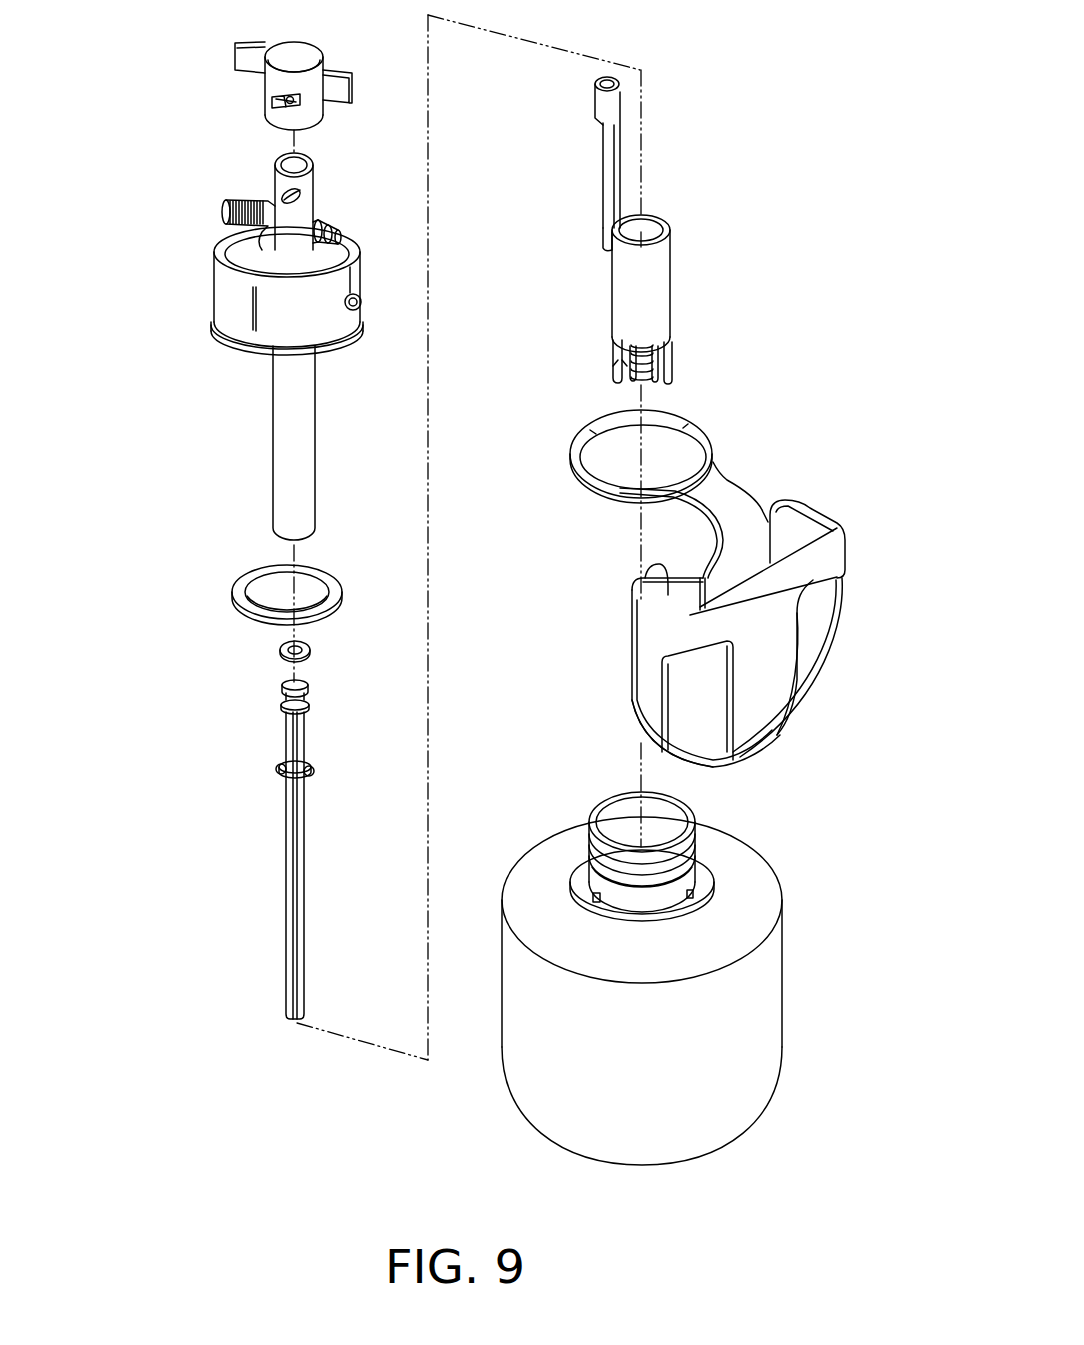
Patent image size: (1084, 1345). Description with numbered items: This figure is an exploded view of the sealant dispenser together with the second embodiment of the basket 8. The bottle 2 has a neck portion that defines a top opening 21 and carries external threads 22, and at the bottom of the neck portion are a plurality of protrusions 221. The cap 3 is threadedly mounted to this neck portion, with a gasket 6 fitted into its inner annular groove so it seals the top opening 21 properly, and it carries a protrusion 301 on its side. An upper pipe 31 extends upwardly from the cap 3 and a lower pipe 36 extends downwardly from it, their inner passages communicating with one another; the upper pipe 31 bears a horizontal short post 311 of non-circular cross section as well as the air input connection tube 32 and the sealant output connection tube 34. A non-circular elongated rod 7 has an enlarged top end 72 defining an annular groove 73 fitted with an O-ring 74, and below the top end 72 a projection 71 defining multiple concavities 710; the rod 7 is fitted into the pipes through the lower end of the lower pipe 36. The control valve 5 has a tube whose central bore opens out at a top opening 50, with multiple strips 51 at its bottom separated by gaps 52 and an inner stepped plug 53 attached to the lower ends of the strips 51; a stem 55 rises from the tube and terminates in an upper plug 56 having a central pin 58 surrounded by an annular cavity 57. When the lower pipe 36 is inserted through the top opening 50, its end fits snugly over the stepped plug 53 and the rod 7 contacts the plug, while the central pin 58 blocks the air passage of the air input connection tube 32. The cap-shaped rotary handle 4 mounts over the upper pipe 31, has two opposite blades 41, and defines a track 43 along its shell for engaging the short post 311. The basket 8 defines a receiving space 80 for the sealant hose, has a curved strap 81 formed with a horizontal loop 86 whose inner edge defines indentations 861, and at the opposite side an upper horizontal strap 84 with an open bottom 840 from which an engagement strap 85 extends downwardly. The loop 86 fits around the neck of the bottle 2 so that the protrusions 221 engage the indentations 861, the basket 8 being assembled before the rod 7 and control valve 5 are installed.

The bottle 2 is at (730, 1087).
The top opening 21 is at (677, 827).
The external threads 22 is at (700, 858).
The protrusions 221 is at (697, 897).
The cap 3 is at (232, 301).
The protrusion 301 is at (362, 305).
The upper pipe 31 is at (300, 212).
The horizontal short post 311 is at (291, 197).
The air input connection tube 32 is at (225, 212).
The sealant output connection tube 34 is at (318, 234).
The lower pipe 36 is at (288, 467).
The rotary handle 4 is at (298, 55).
The blades 41 is at (245, 63).
The track 43 is at (270, 103).
The control valve 5 is at (653, 297).
The top opening 50 is at (653, 230).
The strips 51 is at (670, 363).
The gaps 52 is at (662, 353).
The inner stepped plug 53 is at (624, 365).
The stem 55 is at (607, 172).
The upper plug 56 is at (600, 101).
The annular cavity 57 is at (598, 79).
The central pin 58 is at (615, 88).
The gasket 6 is at (238, 590).
The elongated rod 7 is at (287, 918).
The projection 71 is at (278, 768).
The concavities 710 is at (305, 779).
The enlarged top end 72 is at (283, 691).
The annular groove 73 is at (283, 707).
The O-ring 74 is at (280, 647).
The basket 8 is at (652, 677).
The receiving space 80 is at (667, 593).
The curved strap 81 is at (727, 500).
The upper horizontal strap 84 is at (700, 632).
The open bottom 840 is at (647, 745).
The engagement strap 85 is at (767, 710).
The horizontal loop 86 is at (713, 449).
The indentations 861 is at (597, 480).